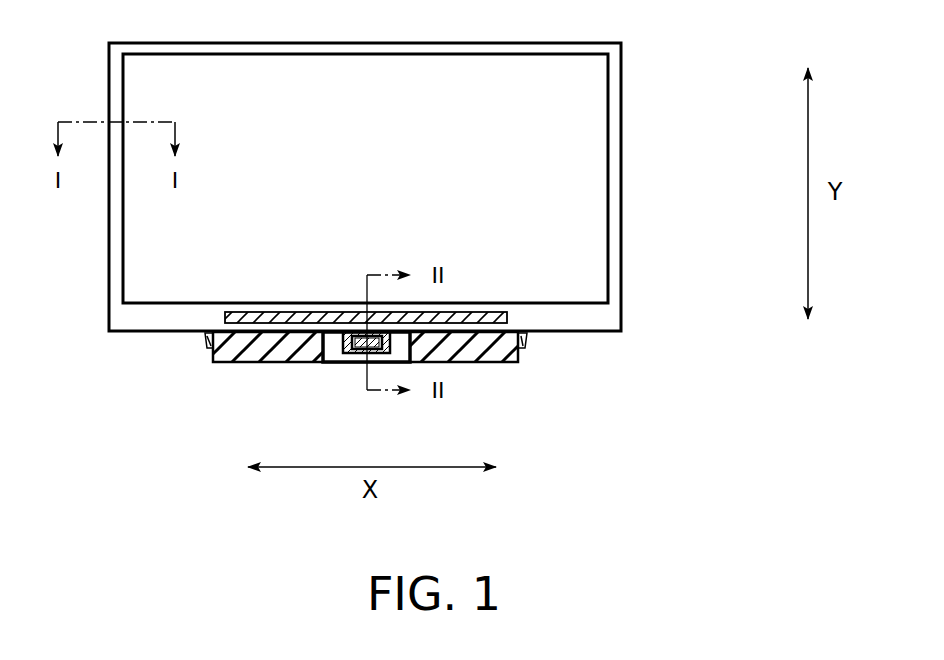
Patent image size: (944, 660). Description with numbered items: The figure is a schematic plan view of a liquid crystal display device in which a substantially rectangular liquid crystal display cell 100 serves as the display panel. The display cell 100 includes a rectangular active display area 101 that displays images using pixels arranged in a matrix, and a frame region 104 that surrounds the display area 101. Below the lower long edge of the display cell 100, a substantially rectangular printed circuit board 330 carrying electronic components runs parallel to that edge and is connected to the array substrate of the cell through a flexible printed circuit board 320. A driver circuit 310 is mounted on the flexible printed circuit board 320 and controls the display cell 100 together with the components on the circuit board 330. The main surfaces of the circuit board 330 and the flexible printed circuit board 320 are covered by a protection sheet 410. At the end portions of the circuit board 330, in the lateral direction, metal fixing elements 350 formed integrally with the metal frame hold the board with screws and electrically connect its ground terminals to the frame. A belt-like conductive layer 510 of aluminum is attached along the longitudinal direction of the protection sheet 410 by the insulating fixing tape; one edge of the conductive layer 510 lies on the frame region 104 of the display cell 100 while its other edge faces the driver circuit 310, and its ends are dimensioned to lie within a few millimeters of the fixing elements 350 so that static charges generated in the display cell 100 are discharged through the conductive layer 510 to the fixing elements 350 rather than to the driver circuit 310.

The liquid crystal display cell 100 is at (640, 104).
The active display area 101 is at (598, 242).
The frame region 104 is at (617, 297).
The driver circuit 310 is at (357, 352).
The flexible printed circuit board 320 is at (340, 364).
The printed circuit board 330 is at (487, 352).
The metal fixing element 350 is at (527, 341).
The protection sheet 410 is at (208, 350).
The conductive layer 510 is at (252, 318).